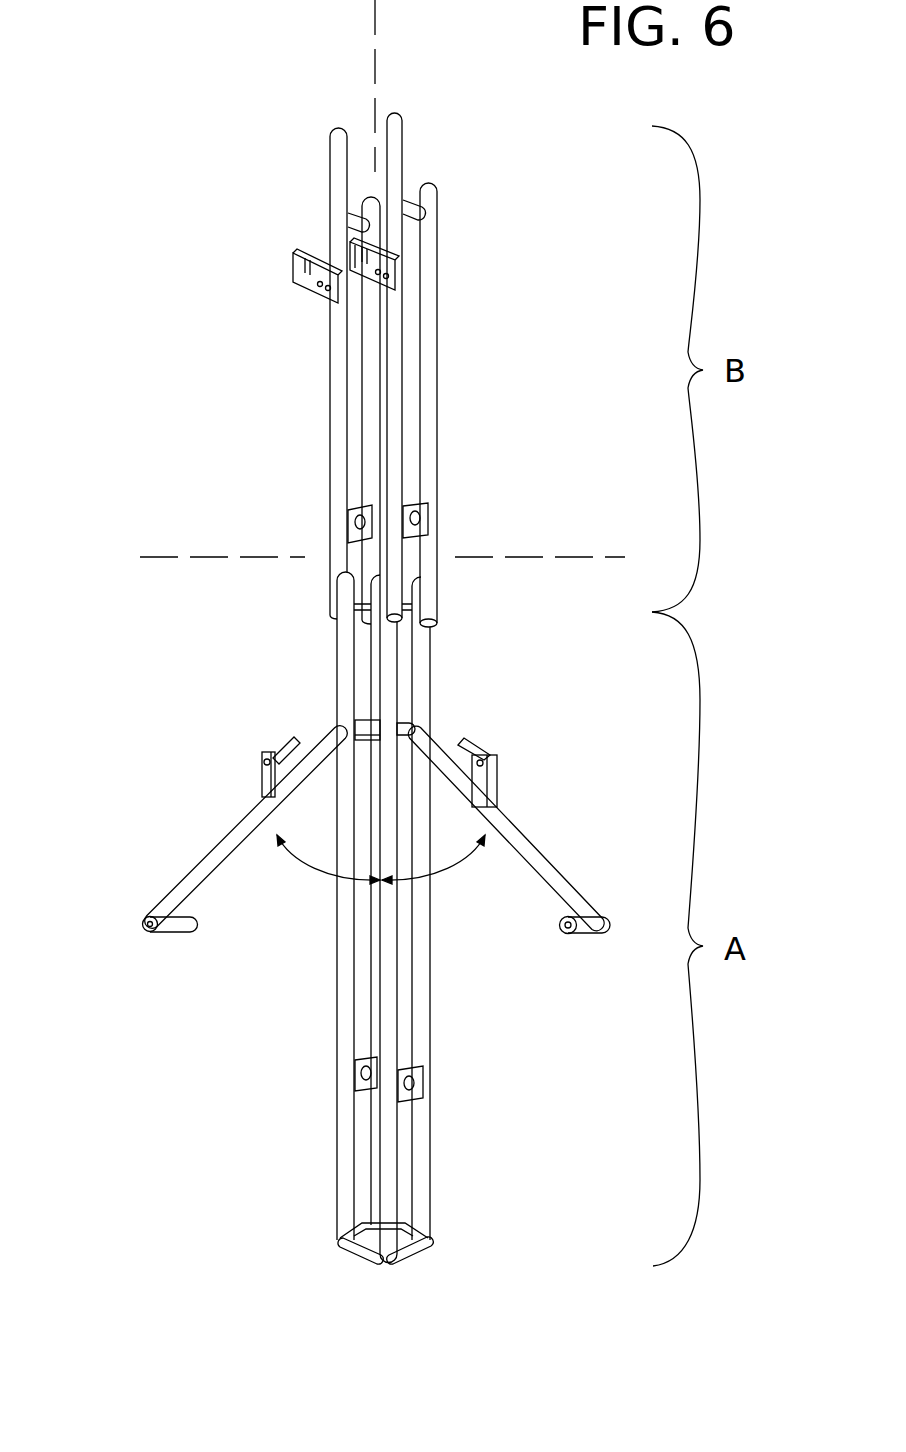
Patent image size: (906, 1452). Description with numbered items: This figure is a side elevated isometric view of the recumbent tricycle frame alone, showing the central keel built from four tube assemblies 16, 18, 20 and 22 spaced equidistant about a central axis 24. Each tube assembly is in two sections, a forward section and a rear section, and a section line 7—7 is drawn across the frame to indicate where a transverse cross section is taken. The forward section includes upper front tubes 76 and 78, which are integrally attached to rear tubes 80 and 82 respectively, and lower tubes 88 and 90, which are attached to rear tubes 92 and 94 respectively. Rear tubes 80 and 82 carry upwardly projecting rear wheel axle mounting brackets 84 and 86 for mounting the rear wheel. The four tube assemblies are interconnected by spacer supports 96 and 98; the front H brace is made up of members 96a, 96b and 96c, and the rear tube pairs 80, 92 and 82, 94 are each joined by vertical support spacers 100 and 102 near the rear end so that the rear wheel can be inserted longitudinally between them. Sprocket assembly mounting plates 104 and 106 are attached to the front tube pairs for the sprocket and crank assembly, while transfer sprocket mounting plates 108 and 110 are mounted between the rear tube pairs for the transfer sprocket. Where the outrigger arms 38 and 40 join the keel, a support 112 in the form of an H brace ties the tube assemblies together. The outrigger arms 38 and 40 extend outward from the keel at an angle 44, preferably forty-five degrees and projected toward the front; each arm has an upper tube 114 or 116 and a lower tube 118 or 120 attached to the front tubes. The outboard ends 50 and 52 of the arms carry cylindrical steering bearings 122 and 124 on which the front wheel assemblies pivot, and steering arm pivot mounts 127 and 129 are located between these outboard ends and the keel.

The central axis 24 is at (373, 98).
The vertical support spacer 102 is at (360, 217).
The vertical support spacer 100 is at (408, 197).
The rear wheel axle mounting bracket 86 is at (306, 255).
The rear wheel axle mounting bracket 84 is at (383, 258).
The rear tube (upper right outer) 82 is at (335, 340).
The rear tube (upper left outer) 80 is at (395, 323).
The rear tube (lower right outer) 94 is at (368, 360).
The rear tube (lower left outer) 92 is at (425, 375).
The tube assembly 20 is at (350, 410).
The transfer sprocket mounting plate 110 is at (352, 512).
The transfer sprocket mounting plate 108 is at (420, 512).
The section line 7- 7 is at (226, 598).
The spacer support 98 is at (410, 636).
The support (H brace) 112 is at (368, 727).
The steering arm pivot mount 127 is at (266, 755).
The outrigger arm 38 is at (212, 774).
The steering arm pivot mount 129 is at (490, 780).
The outrigger arm 40 is at (545, 806).
The upper tube of outrigger arm 114 is at (262, 815).
The upper tube of outrigger arm 116 is at (513, 848).
The lower tube of outrigger arm 118 is at (207, 895).
The lower tube of outrigger arm 120 is at (572, 884).
The angle 44 is at (310, 870).
The cylindrical steering bearing 122 is at (144, 928).
The cylindrical steering bearing 124 is at (562, 931).
The outboard end of outrigger arm 50 is at (180, 946).
The outboard end of outrigger arm 52 is at (592, 960).
The lower tube (lower right inner) 90 is at (372, 1000).
The upper front tube (upper right inner) 78 is at (337, 1005).
The lower tube (lower left inner) 88 is at (428, 988).
The sprocket assembly mounting plate 106 is at (358, 1083).
The upper front tube (upper left inner) 76 is at (387, 1043).
The sprocket assembly mounting plate 104 is at (420, 1083).
The tube assembly 22 is at (316, 1130).
The tube assembly 16 is at (410, 1187).
The tube assembly 18 is at (443, 1218).
The spacer support (front H brace) 96 is at (352, 1262).
The front H brace element 96a is at (407, 1250).
The front H brace element 96b is at (358, 1237).
The front H brace element 96c is at (362, 1250).